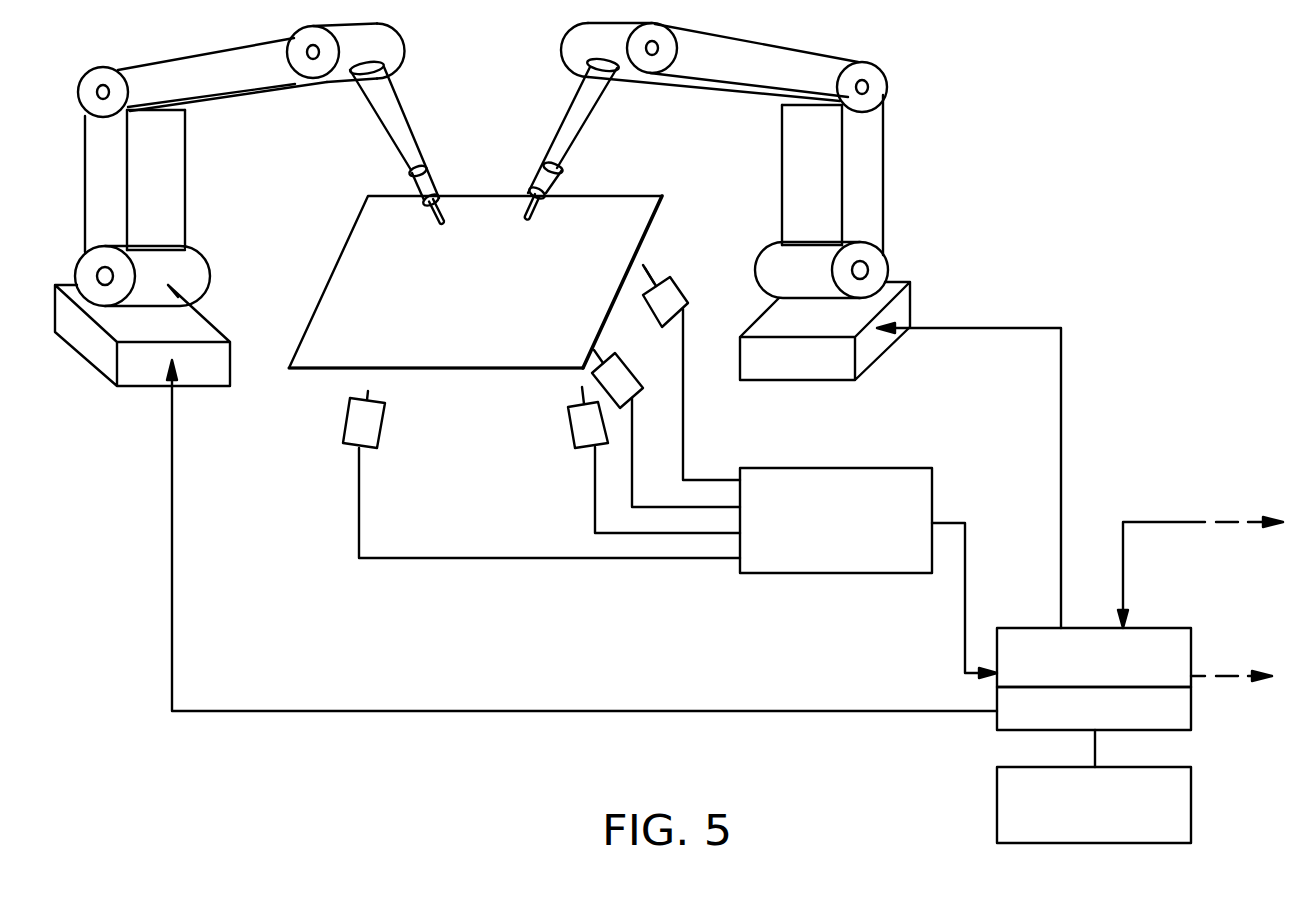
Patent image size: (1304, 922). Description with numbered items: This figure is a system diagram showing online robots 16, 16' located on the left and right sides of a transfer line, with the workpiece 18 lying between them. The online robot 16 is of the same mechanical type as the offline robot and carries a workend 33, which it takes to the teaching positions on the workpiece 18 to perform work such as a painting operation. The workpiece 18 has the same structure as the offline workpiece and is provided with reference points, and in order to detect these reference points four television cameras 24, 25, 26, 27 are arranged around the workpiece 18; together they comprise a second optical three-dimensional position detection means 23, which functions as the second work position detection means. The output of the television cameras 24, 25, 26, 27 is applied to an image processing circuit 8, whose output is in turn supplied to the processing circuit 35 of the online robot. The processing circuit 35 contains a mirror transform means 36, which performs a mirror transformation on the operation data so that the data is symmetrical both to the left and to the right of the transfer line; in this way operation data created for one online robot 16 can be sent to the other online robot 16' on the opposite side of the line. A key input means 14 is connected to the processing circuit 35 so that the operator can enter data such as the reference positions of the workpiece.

The online robot 16' is at (224, 205).
The online robot 16 is at (741, 201).
The workend 33 is at (540, 212).
The workpiece 18 is at (484, 317).
The second optical three-dimensional position detection means 23 is at (685, 270).
The television camera 27 is at (693, 290).
The television camera 26 is at (630, 367).
The television camera 25 is at (568, 432).
The television camera 24 is at (345, 428).
The image processing circuit 8 is at (883, 467).
The processing circuit 35 is at (1167, 627).
The mirror transform means 36 is at (1177, 730).
The key input means 14 is at (997, 807).